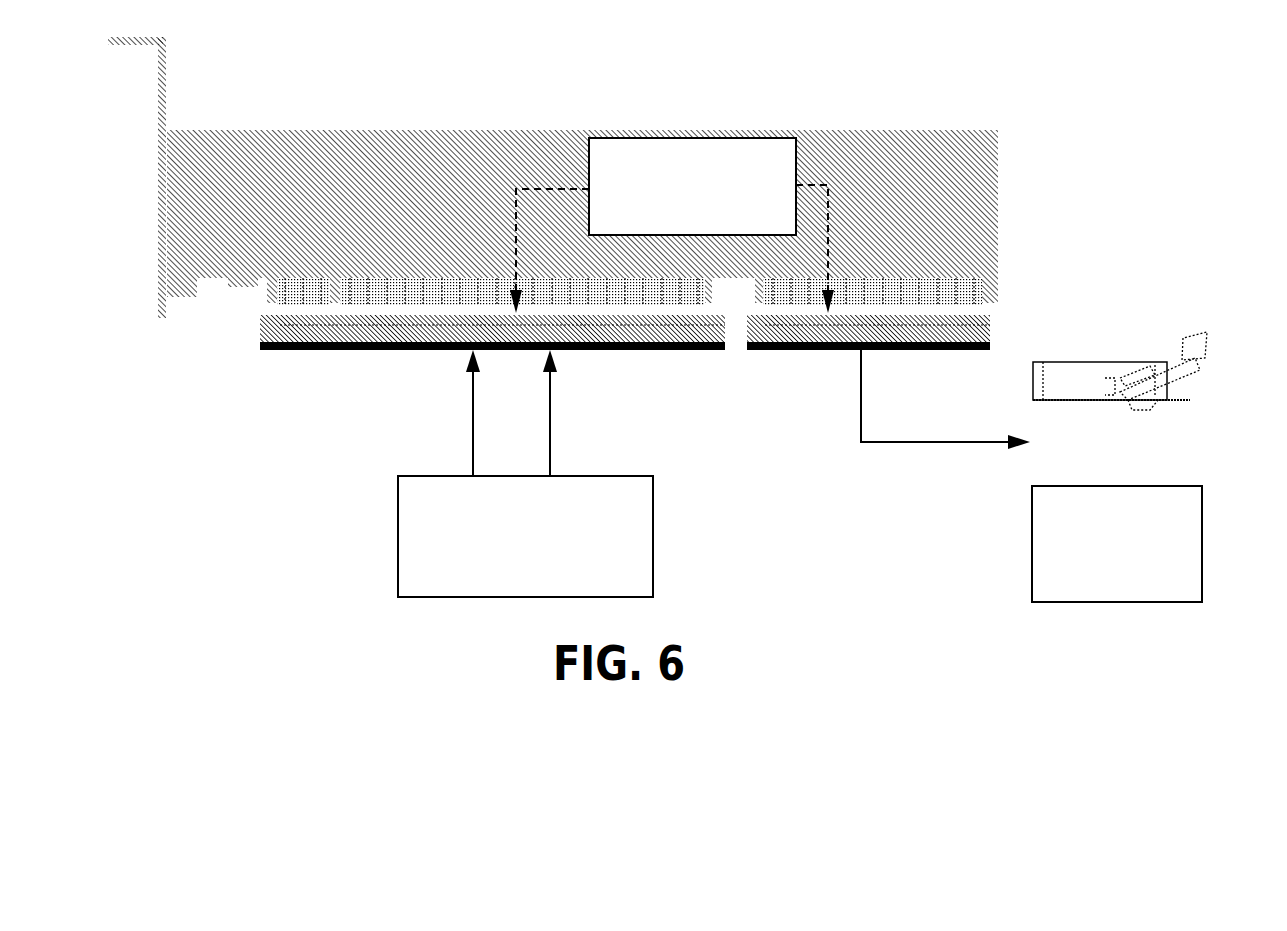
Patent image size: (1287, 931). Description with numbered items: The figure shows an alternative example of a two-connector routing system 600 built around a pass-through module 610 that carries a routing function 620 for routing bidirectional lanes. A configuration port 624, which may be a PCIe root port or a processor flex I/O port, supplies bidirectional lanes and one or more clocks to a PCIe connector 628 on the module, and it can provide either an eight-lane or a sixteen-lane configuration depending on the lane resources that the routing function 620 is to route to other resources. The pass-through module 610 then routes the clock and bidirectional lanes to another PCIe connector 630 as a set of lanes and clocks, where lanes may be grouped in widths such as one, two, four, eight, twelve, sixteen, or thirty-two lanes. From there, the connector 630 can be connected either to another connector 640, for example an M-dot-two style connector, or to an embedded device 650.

The two-connector routing system 600 is at (1048, 95).
The pass-through module 610 is at (998, 205).
The routing function 620 is at (796, 168).
The configuration port 624 is at (653, 522).
The PCIe connector 628 is at (620, 349).
The PCIe connector 630 is at (988, 328).
The connector 640 is at (1087, 362).
The embedded device 650 is at (1202, 535).